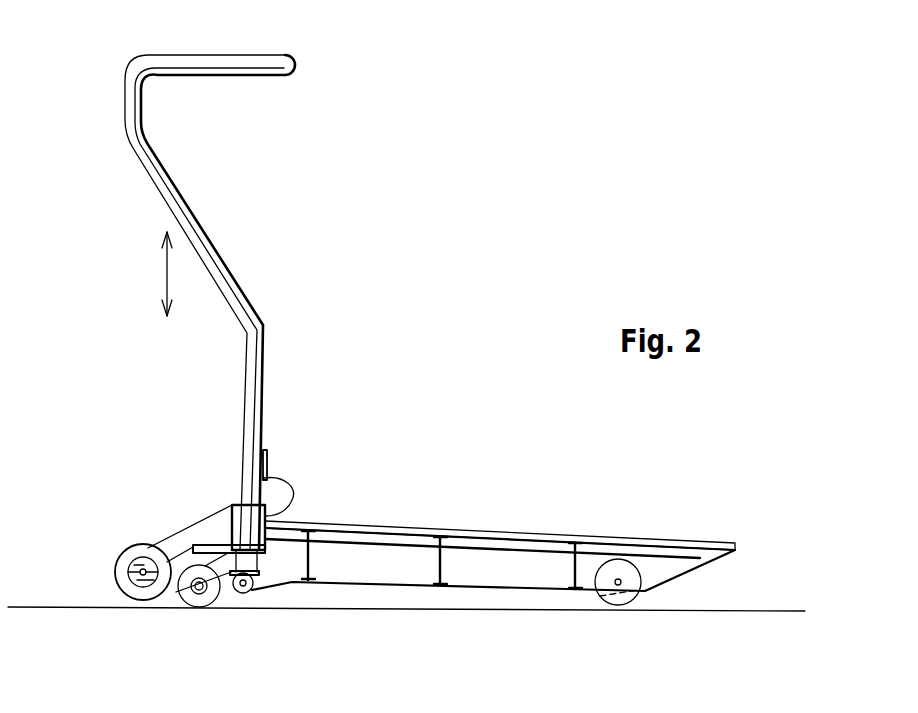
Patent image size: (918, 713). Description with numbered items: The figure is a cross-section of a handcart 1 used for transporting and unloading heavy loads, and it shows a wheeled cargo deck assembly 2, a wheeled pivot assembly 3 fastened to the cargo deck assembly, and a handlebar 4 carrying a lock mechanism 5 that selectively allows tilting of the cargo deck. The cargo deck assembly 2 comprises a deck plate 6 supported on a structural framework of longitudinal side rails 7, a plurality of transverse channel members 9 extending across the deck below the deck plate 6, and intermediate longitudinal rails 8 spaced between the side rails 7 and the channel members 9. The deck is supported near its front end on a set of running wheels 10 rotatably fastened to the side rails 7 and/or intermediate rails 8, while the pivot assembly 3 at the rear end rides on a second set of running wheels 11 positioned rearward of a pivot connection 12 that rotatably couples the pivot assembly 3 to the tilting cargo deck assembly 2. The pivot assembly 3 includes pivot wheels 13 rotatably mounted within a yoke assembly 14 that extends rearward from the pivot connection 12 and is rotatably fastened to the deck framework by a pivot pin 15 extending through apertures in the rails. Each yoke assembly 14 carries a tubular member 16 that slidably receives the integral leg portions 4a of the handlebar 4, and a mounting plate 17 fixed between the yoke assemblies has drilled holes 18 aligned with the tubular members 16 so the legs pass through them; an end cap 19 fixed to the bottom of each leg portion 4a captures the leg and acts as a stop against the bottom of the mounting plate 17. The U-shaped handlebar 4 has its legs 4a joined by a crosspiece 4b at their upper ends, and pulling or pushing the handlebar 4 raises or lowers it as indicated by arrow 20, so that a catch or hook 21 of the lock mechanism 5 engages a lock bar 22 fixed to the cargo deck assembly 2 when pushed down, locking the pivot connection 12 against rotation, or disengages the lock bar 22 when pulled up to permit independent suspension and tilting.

The handcart 1 is at (453, 342).
The wheeled cargo deck assembly 2 is at (493, 561).
The wheeled pivot assembly 3 is at (145, 457).
The handlebar 4 is at (282, 283).
The handlebar leg portions 4a is at (264, 354).
The crosspiece 4b is at (290, 62).
The lock mechanism 5 is at (300, 480).
The deck plate 6 is at (452, 530).
The longitudinal side rails 7 is at (405, 562).
The intermediate longitudinal rails 8 is at (415, 538).
The transverse channel members 9 is at (315, 556).
The running wheels 10 is at (633, 590).
The second set of running wheels 11 is at (188, 598).
The pivot connection 12 is at (228, 588).
The pivot wheels 13 is at (118, 562).
The yoke assembly 14 is at (155, 582).
The pivot pin 15 is at (243, 592).
The tubular member 16 is at (237, 547).
The mounting plate 17 is at (175, 532).
The holes 18 is at (233, 547).
The end cap 19 is at (258, 570).
The arrow 20 is at (164, 280).
The catch or hook 21 is at (270, 480).
The lock bar 22 is at (308, 520).